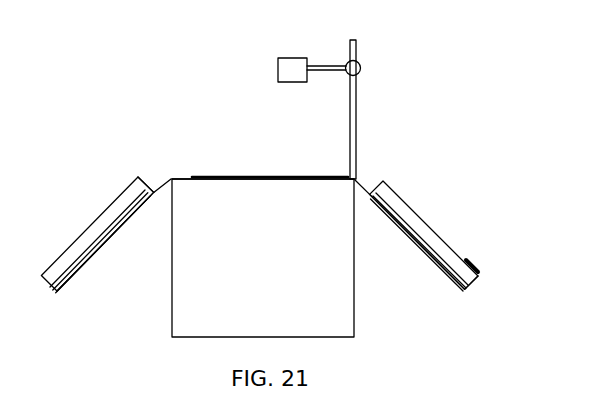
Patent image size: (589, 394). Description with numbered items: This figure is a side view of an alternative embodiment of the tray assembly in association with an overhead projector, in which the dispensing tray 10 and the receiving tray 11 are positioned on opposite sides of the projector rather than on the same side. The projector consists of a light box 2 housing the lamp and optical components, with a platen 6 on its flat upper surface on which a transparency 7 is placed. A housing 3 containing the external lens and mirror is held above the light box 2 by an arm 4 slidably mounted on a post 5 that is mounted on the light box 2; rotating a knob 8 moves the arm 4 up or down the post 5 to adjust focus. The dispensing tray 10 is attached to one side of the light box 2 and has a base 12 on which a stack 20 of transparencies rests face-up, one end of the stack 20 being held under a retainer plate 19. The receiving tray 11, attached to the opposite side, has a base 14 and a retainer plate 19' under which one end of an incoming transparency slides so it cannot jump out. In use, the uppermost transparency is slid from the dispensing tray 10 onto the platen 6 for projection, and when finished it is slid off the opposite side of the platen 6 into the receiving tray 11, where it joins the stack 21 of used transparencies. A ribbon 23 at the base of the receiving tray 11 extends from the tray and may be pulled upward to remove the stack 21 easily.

The light box 2 is at (276, 260).
The housing 3 is at (297, 72).
The arm 4 is at (327, 66).
The post 5 is at (357, 127).
The platen 6 is at (183, 181).
The transparency 7 is at (283, 176).
The knob 8 is at (360, 67).
The dispensing tray 10 is at (138, 176).
The receiving tray 11 is at (385, 179).
The base 12 is at (116, 234).
The base 14 is at (418, 244).
The retainer plate 19 is at (79, 234).
The retainer plate 19' is at (505, 237).
The stack of transparencies 20 is at (121, 200).
The stack of 'used' transparencies 21 is at (430, 234).
The ribbon 23 is at (484, 268).